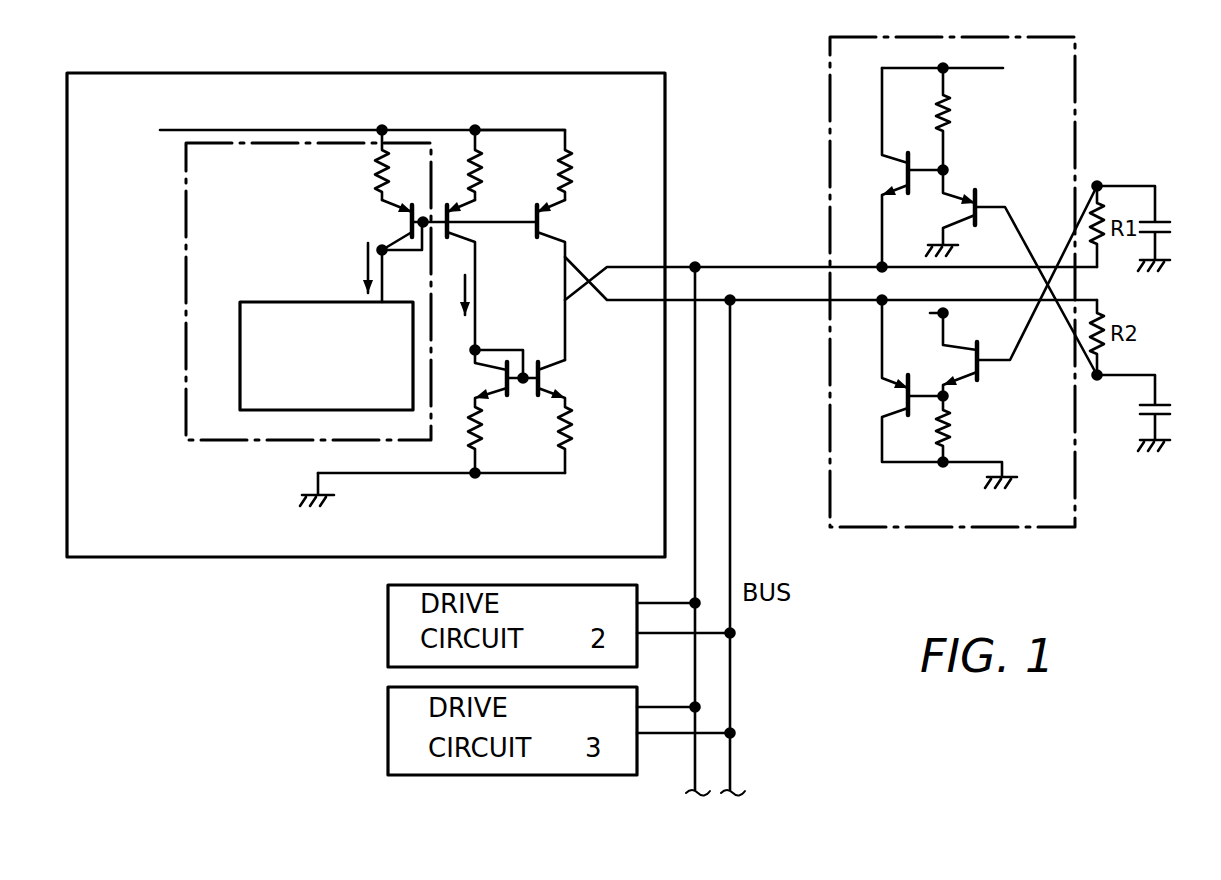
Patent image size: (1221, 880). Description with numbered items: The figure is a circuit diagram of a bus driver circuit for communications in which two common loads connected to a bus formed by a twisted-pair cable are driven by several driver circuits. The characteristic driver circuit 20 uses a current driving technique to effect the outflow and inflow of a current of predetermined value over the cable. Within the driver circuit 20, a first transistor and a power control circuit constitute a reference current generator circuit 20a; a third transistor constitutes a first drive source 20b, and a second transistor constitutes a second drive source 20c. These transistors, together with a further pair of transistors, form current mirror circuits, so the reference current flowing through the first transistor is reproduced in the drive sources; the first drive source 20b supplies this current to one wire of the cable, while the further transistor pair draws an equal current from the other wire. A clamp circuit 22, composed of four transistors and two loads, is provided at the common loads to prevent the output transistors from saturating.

The driver circuit 20 is at (665, 125).
The reference current generator circuit 20a is at (186, 283).
The first drive source 20b is at (565, 223).
The second drive source 20c is at (470, 228).
The bus termination circuit 22 is at (1085, 103).